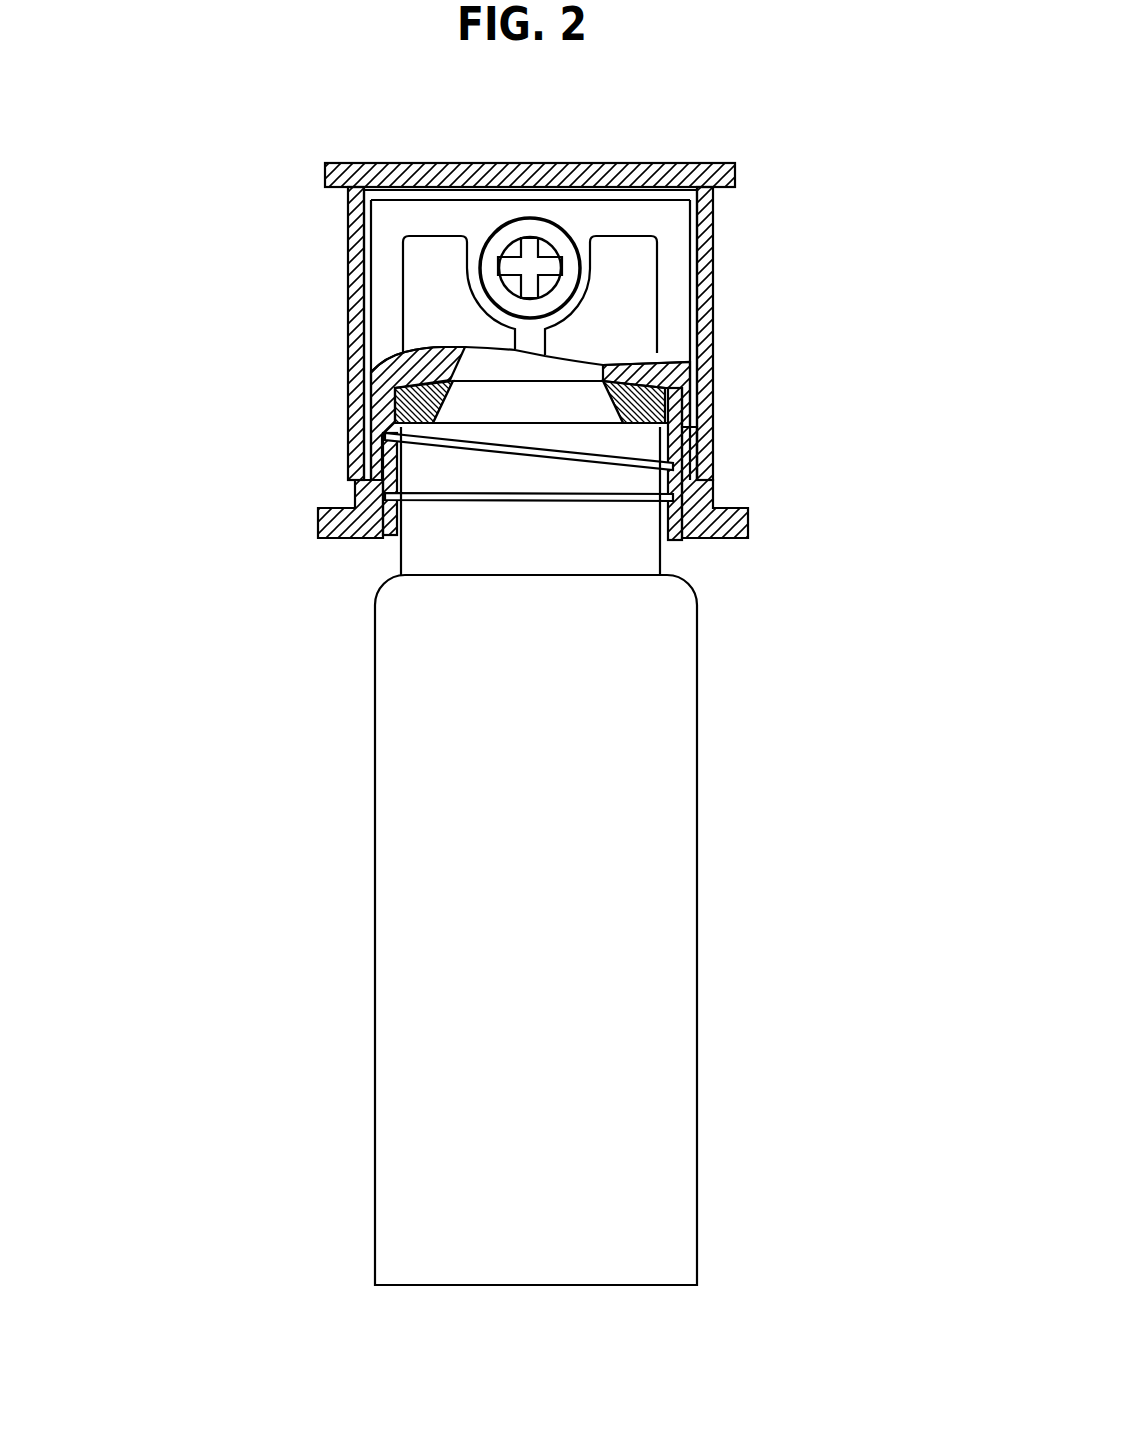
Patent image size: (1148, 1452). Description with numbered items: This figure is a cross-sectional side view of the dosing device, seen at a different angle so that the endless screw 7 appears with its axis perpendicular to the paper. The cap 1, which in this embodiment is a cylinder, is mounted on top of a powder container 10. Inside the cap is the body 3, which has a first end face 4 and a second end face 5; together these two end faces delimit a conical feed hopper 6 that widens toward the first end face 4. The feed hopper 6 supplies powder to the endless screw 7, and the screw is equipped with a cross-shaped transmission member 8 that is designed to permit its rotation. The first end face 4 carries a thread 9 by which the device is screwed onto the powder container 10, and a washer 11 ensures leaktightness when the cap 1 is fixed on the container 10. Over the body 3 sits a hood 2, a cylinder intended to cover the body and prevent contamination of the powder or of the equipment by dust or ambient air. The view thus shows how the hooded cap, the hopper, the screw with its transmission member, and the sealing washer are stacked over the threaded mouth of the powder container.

The cap 1 is at (375, 227).
The hood 2 is at (353, 255).
The body 3 is at (382, 303).
The first end face 4 is at (350, 538).
The second end face 5 is at (630, 200).
The conical feed hopper 6 is at (558, 400).
The endless screw 7 is at (527, 270).
The cross-shaped transmission member 8 is at (550, 278).
The thread 9 is at (473, 453).
The powder container 10 is at (375, 903).
The washer 11 is at (700, 440).